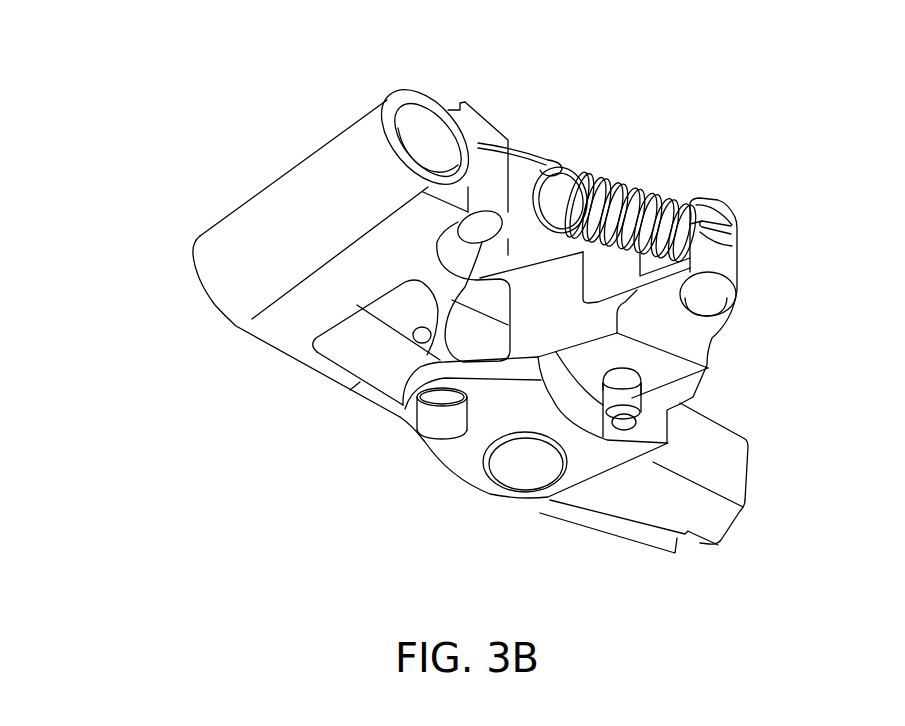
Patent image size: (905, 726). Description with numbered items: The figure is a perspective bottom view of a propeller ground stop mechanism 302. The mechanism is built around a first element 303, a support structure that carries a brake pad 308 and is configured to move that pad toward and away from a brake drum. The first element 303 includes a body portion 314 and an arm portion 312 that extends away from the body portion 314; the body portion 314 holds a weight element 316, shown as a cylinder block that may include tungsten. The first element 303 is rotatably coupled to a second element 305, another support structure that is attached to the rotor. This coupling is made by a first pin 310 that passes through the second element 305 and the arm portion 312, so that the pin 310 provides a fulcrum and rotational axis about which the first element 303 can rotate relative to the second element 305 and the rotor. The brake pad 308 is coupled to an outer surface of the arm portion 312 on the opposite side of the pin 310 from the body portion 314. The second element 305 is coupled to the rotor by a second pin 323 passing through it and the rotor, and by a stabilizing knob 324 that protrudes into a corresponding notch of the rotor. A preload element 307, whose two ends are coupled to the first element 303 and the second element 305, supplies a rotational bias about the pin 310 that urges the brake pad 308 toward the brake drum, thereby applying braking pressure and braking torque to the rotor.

The propeller ground stop mechanism 302 is at (132, 68).
The first element 303 is at (213, 271).
The body portion 314 is at (355, 138).
The weight element 316 is at (420, 133).
The preload element 307 is at (628, 160).
The second element 305 is at (708, 368).
The second pin 323 is at (748, 446).
The arm portion 312 is at (726, 547).
The brake pad 308 is at (654, 549).
The first pin 310 is at (514, 466).
The stabilizing knob 324 is at (430, 440).